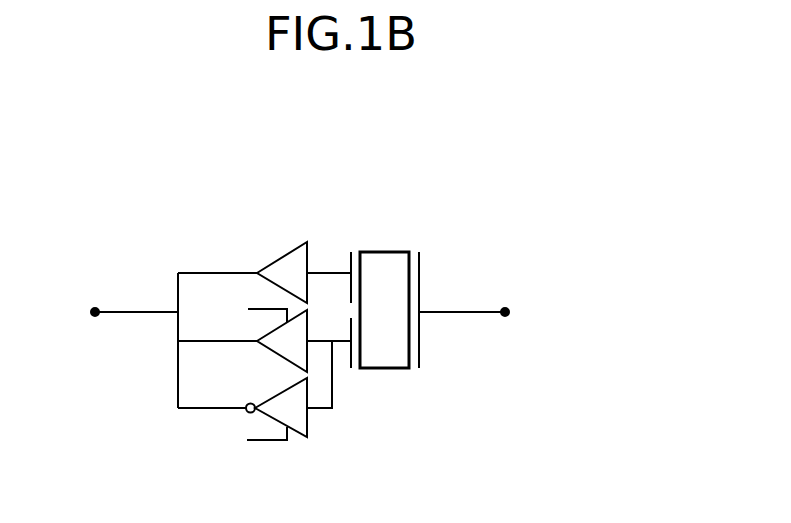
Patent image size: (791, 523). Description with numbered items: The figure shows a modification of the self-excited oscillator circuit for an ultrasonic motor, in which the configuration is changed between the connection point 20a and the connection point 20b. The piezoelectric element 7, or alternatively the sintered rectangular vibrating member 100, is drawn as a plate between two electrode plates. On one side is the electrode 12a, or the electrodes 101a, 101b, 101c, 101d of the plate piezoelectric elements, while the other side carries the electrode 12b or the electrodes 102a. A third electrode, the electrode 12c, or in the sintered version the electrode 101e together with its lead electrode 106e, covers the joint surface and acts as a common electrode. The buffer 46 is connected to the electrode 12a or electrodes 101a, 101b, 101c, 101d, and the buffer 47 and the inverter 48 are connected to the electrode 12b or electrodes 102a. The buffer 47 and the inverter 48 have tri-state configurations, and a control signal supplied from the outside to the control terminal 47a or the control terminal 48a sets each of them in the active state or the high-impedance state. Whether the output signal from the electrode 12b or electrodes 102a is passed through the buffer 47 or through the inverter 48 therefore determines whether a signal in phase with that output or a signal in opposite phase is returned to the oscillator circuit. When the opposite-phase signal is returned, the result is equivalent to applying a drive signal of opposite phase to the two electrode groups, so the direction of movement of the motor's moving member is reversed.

The connection point 20a is at (95, 316).
The connection point 20b is at (505, 316).
The buffer 46 is at (280, 256).
The buffer 47 is at (274, 357).
The control terminal 47a is at (264, 308).
The inverter 48 is at (307, 423).
The control terminal 48a is at (258, 443).
The vibrating member 100 is at (415, 358).
The piezoelectric element 7 is at (395, 370).
The electrode 12b is at (431, 411).
The electrodes 102a is at (350, 355).
The electrode 12c is at (535, 300).
The electrode 101e is at (535, 300).
The lead electrode 106e is at (422, 265).
The electrode 101a is at (409, 226).
The electrode 101b is at (409, 226).
The electrode 101c is at (409, 226).
The electrode 101d is at (409, 226).
The electrode 12a is at (350, 266).